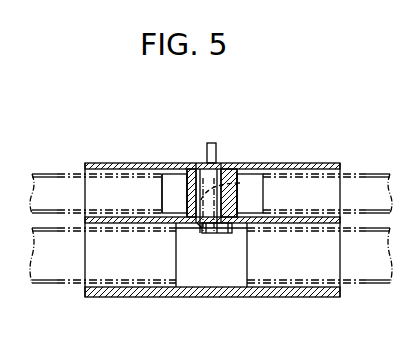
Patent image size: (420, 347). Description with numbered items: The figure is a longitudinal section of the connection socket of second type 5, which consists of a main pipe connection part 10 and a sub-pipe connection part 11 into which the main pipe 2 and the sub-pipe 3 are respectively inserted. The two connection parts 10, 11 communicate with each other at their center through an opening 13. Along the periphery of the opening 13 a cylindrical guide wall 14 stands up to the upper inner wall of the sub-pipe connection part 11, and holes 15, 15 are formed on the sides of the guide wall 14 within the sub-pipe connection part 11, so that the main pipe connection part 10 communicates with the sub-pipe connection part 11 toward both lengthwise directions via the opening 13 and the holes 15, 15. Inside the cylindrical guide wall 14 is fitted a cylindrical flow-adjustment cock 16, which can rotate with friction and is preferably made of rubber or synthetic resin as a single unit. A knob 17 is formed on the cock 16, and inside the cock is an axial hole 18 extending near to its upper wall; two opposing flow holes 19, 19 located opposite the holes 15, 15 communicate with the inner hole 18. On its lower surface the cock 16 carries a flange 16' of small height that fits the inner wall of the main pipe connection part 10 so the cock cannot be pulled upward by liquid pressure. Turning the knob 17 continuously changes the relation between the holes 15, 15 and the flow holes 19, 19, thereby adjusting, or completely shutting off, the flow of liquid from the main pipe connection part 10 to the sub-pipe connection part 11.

The main pipe 2 is at (48, 257).
The sub-pipe 3 is at (53, 174).
The connection socket of second type 5 is at (203, 138).
The main pipe connection part 10 is at (210, 268).
The sub-pipe connection part 11 is at (163, 172).
The opening 13 is at (190, 230).
The cylindrical guide wall 14 is at (187, 168).
The holes 15 is at (187, 193).
The flow-adjustment cock 16 is at (225, 170).
The flange 16' is at (166, 241).
The knob 17 is at (212, 143).
The hole 18 is at (215, 233).
The flow holes 19 is at (240, 183).